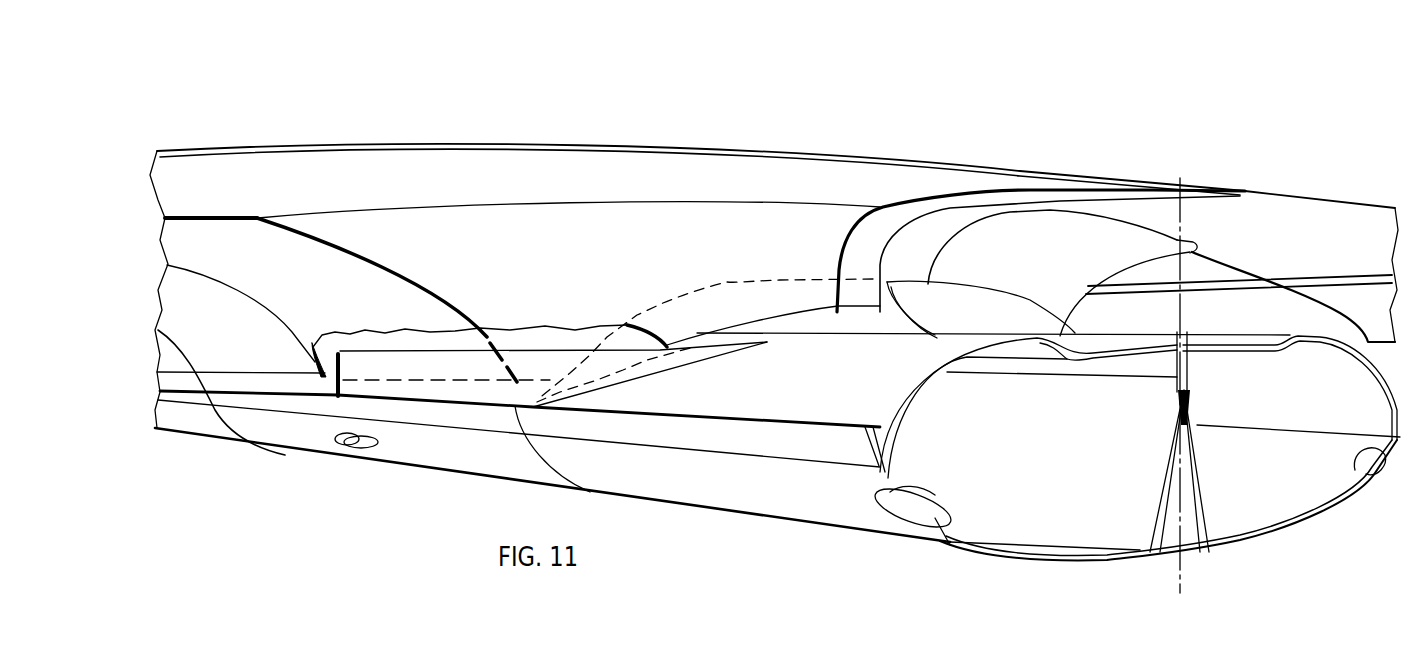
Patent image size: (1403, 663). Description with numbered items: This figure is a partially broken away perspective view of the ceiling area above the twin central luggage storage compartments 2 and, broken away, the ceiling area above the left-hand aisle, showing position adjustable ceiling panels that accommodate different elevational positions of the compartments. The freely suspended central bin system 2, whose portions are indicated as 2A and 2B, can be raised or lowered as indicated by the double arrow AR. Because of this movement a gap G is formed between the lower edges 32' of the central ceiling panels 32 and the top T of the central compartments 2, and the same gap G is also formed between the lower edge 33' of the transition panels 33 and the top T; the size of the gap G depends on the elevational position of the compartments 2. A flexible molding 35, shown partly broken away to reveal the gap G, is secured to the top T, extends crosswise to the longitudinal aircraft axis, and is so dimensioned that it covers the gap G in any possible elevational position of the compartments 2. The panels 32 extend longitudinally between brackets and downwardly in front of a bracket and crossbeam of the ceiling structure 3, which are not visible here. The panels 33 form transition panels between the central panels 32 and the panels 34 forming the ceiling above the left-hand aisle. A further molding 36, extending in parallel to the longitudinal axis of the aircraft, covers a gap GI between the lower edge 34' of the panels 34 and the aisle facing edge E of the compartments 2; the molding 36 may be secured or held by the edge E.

The ceiling structure 3 is at (615, 110).
The transition panels 33 is at (826, 272).
The lower edge of transition panels 33' is at (993, 287).
The panels 34 is at (341, 300).
The lower edge of the panels 34' is at (221, 404).
The gap GI is at (243, 395).
The further molding 36 is at (278, 387).
The aisle facing edge E is at (427, 403).
The central ceiling panels 32 is at (1017, 251).
The lower edges of central ceiling panels 32' is at (891, 341).
The flexible molding 35 is at (1017, 313).
The top of the central compartments T is at (813, 312).
The gap G is at (803, 322).
The central luggage storage compartments 2 is at (690, 525).
The first panel portion 2A is at (813, 507).
The second panel portion 2B is at (1280, 512).
The double arrow AR is at (1067, 430).